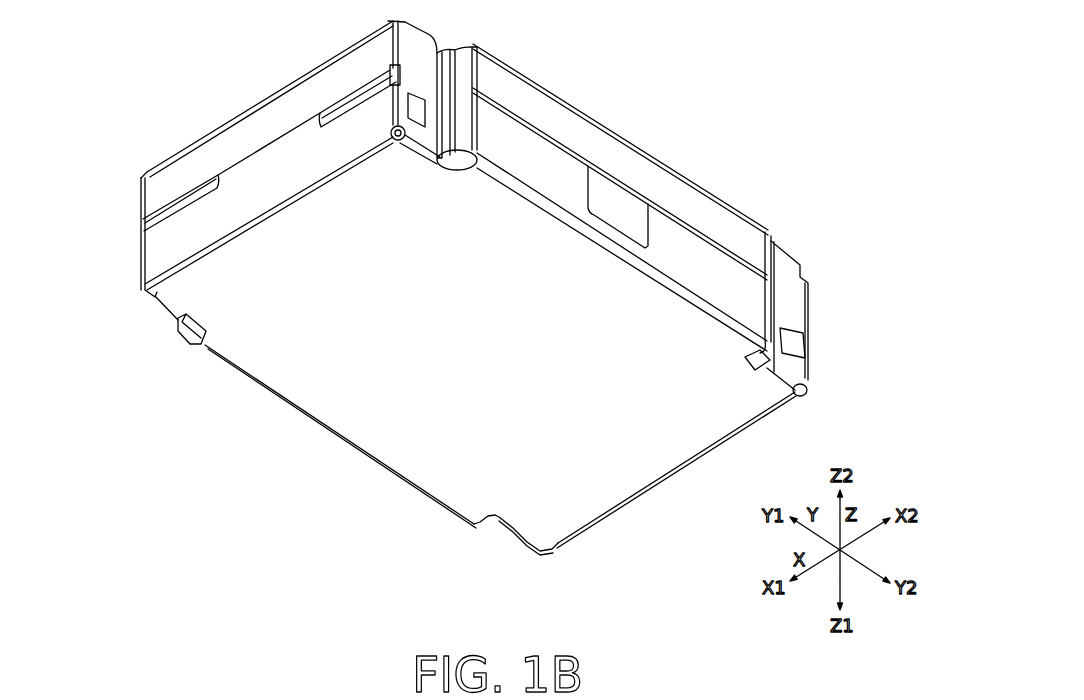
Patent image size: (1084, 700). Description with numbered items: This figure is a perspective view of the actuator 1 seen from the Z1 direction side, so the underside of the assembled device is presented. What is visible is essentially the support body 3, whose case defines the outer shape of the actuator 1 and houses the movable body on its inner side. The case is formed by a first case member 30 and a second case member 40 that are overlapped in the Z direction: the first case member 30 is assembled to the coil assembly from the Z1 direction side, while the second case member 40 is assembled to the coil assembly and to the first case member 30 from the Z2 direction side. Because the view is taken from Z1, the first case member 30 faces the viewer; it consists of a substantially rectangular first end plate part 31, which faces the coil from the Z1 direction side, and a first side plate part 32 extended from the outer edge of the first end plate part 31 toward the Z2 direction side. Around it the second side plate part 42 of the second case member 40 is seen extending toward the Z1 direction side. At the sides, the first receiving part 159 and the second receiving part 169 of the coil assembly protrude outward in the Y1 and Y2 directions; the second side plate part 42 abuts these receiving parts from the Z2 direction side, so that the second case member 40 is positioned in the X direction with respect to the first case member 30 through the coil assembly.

The actuator 1 is at (263, 65).
The support body 3 is at (664, 155).
The first case member 30 is at (623, 482).
The first end plate part 31 is at (427, 475).
The first side plate part 32 is at (547, 163).
The second case member 40 is at (722, 197).
The second side plate part 42 is at (541, 113).
The first receiving part 159 is at (808, 336).
The second receiving part 169 is at (143, 222).